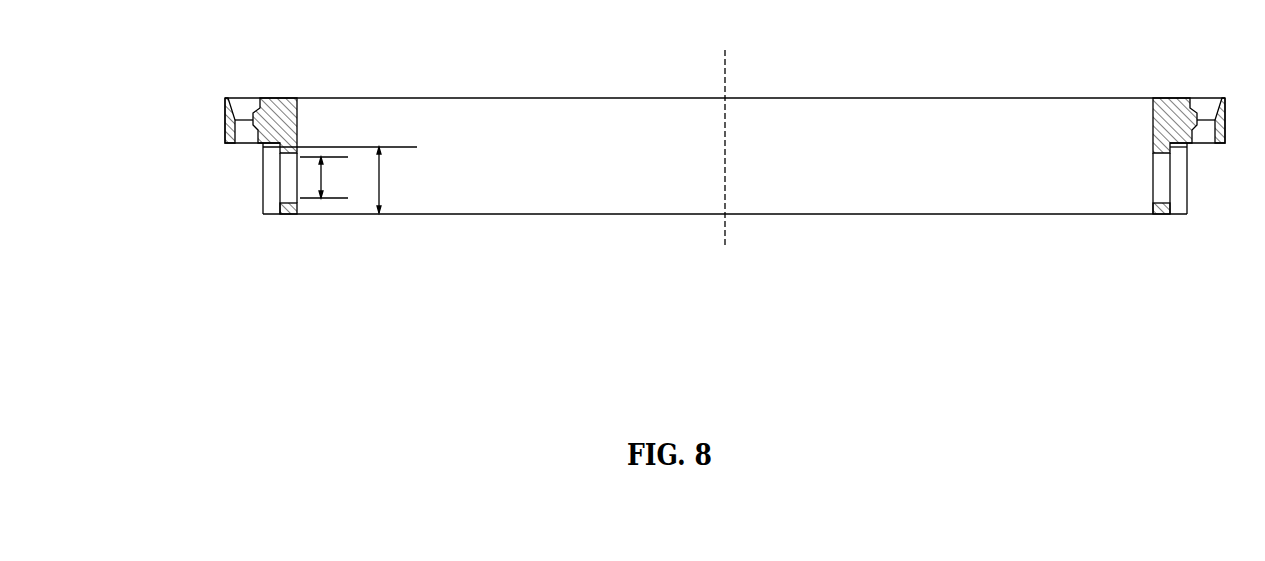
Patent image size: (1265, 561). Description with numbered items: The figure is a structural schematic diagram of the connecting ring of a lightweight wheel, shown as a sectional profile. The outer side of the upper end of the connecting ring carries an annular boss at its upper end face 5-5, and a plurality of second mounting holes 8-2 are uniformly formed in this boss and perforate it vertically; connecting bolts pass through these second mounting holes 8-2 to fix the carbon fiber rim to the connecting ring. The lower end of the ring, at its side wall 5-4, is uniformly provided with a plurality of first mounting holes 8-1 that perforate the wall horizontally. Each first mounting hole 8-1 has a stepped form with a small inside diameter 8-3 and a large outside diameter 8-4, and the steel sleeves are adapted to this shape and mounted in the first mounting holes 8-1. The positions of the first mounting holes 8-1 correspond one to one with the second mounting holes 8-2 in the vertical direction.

The first mounting hole 8-1 is at (652, 176).
The second mounting hole 8-2 is at (657, 98).
The small inside diameter 8-3 is at (322, 186).
The large outside diameter 8-4 is at (458, 220).
The side wall 5-4 is at (646, 277).
The upper end face 5-5 is at (212, 127).